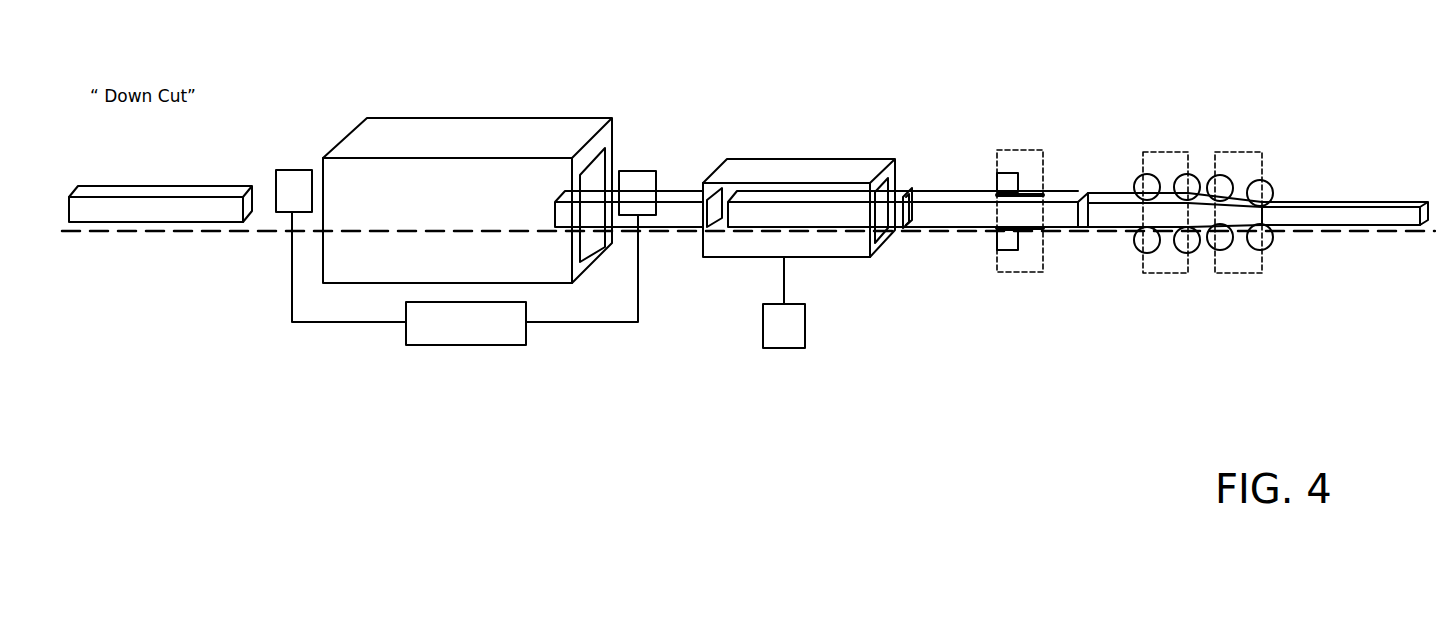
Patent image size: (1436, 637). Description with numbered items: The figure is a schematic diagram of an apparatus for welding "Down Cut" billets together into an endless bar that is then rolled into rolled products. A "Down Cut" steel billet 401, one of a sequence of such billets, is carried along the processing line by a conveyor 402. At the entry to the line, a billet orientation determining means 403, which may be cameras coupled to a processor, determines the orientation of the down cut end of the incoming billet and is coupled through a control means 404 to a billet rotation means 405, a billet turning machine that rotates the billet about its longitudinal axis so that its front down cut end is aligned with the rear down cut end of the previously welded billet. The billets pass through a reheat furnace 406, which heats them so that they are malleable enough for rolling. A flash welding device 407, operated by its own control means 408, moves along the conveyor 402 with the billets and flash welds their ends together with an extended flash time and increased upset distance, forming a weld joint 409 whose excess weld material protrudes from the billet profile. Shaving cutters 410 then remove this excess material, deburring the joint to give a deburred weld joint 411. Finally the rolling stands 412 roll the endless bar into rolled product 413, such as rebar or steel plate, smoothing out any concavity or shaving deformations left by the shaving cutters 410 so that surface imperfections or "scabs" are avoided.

The steel billet 401 is at (187, 153).
The conveyor 402 is at (190, 233).
The billet orientation determining means 403 is at (287, 168).
The control means 404 is at (445, 338).
The billet rotation means 405 is at (627, 172).
The reheat furnace 406 is at (428, 122).
The flash welding device 407 is at (775, 162).
The control means 408 is at (798, 375).
The weld joint 409 is at (898, 233).
The shaving cutters 410 is at (1012, 153).
The deburred weld joint 411 is at (1083, 232).
The rolling stands 412 is at (1160, 152).
The rolled product 413 is at (1327, 220).